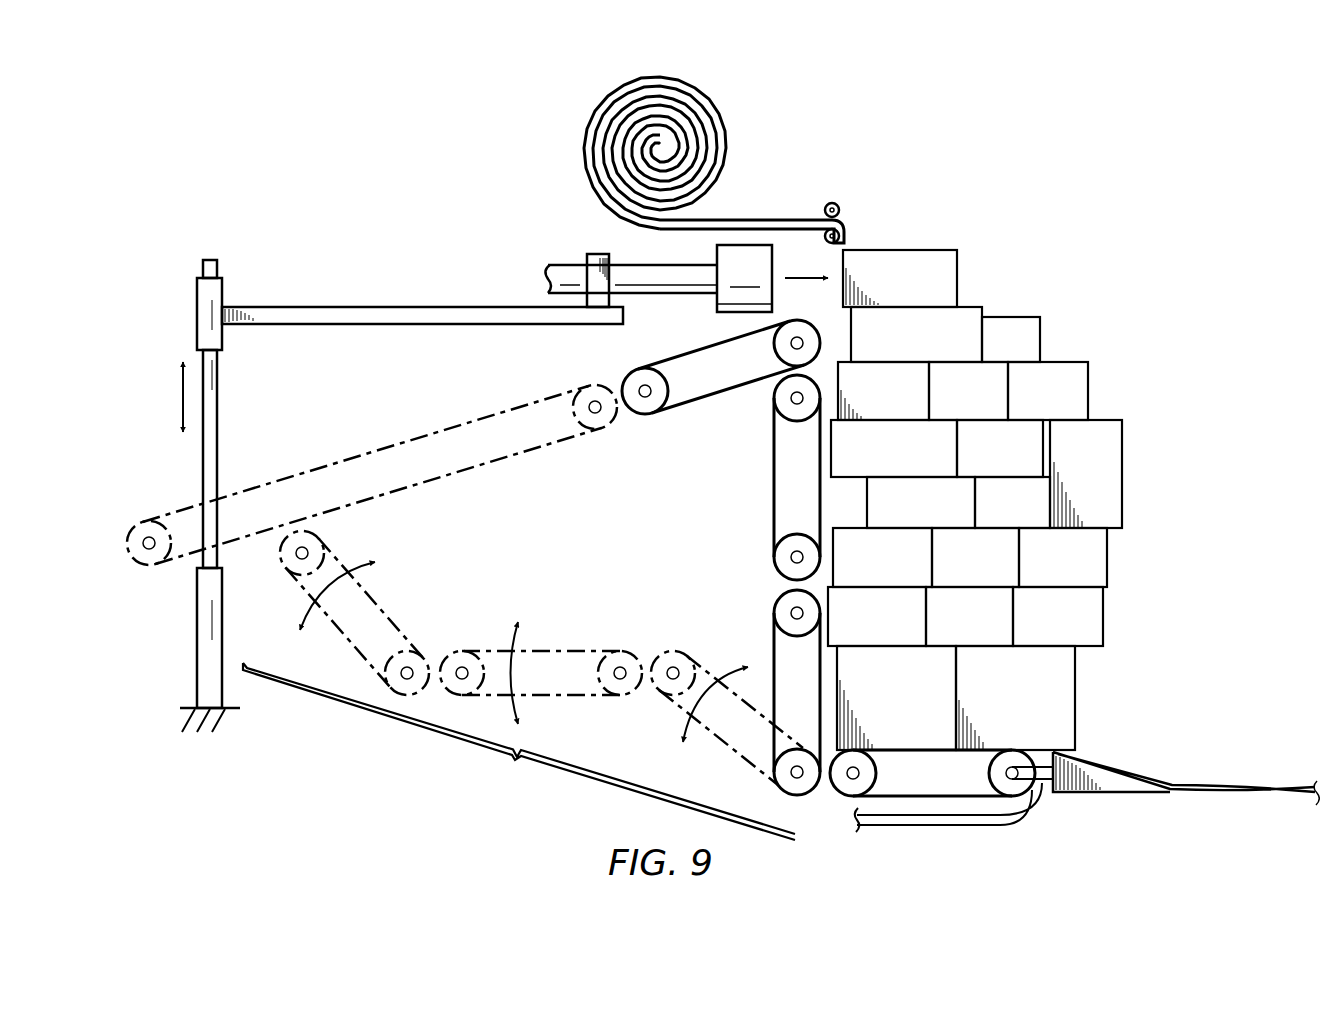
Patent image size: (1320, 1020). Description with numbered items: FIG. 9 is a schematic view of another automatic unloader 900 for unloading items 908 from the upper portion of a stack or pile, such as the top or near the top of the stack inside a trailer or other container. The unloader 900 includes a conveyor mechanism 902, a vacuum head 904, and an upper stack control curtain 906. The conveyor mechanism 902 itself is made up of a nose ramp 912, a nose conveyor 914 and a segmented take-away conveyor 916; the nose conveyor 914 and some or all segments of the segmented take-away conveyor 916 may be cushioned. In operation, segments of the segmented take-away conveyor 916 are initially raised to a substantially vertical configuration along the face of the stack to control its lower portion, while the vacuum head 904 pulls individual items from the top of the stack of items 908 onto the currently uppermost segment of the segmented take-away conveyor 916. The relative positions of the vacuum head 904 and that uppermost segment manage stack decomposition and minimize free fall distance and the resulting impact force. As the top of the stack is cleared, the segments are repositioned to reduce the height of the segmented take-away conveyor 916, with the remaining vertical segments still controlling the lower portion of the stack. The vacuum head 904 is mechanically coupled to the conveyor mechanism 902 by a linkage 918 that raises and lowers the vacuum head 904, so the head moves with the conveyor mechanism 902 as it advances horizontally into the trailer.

The automatic unloader 900 is at (512, 124).
The conveyor mechanism 902 is at (822, 820).
The vacuum head 904 is at (717, 300).
The upper stack control curtain 906 is at (764, 212).
The items 908 is at (991, 255).
The nose ramp 912 is at (1106, 793).
The nose conveyor 914 is at (931, 798).
The segmented take-away conveyor 916 is at (519, 751).
The linkage 918 is at (197, 312).